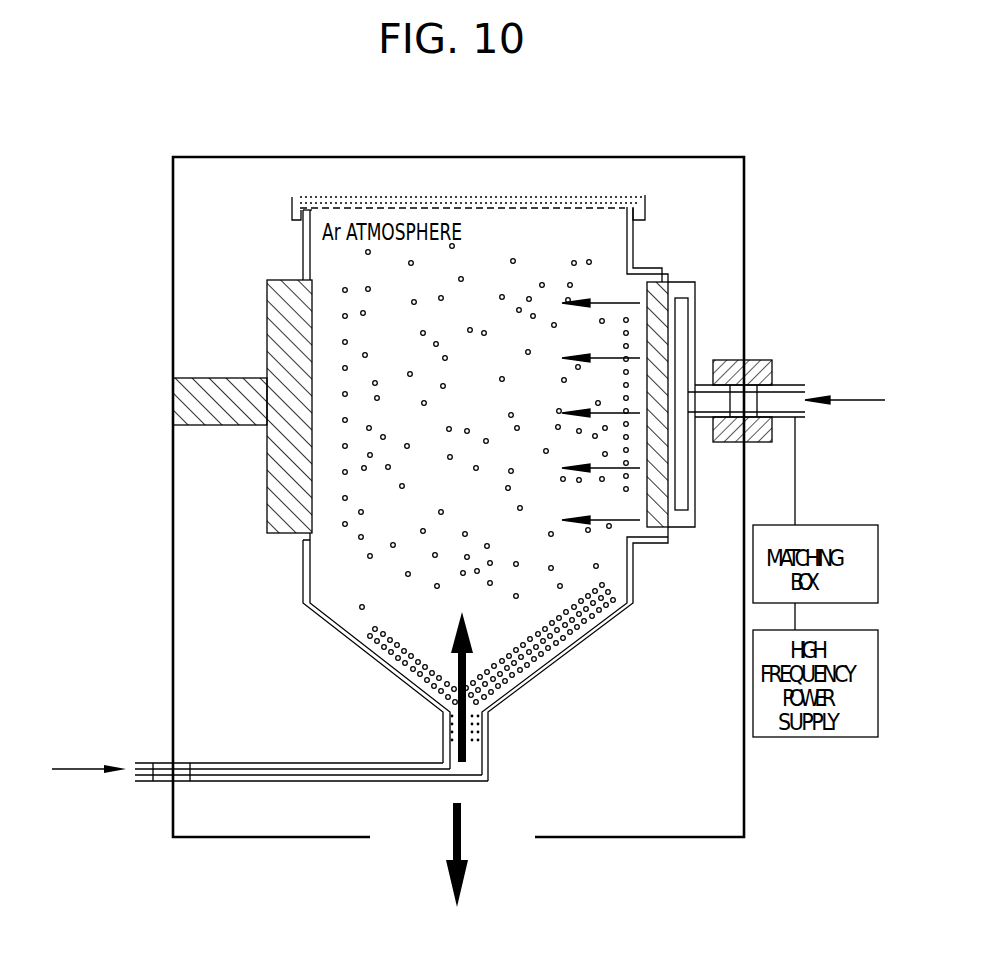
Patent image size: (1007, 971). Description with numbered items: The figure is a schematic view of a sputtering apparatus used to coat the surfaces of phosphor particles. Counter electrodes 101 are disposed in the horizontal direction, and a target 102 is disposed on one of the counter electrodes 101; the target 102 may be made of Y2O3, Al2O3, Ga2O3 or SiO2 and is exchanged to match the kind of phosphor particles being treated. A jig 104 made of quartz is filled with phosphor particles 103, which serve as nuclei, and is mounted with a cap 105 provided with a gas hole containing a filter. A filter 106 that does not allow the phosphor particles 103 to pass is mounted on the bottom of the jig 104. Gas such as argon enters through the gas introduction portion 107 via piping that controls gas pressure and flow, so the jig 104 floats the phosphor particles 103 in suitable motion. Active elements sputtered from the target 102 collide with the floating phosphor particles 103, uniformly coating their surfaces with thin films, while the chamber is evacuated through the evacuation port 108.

The counter electrodes 101 is at (267, 290).
The target 102 is at (660, 298).
The phosphor particles 103 is at (362, 609).
The jig 104 is at (573, 648).
The cap 105 is at (348, 197).
The filter 106 is at (489, 738).
The gas introduction portion 107 is at (270, 772).
The evacuation port 108 is at (414, 832).